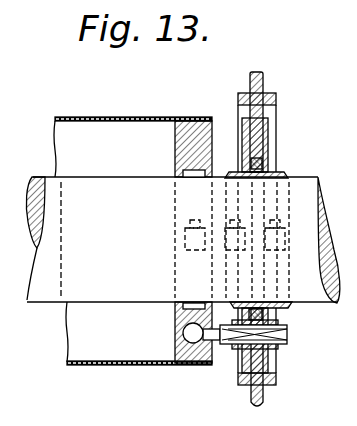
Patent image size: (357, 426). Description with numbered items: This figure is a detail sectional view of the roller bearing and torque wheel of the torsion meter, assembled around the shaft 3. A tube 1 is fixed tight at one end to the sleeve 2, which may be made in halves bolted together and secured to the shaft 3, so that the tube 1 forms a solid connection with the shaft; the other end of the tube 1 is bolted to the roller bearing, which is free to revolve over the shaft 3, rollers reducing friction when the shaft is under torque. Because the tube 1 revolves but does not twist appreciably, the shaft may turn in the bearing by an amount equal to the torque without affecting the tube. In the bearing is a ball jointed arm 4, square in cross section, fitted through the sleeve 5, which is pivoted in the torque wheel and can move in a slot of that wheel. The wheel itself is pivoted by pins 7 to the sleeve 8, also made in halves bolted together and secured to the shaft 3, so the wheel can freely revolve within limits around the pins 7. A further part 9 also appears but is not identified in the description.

The tube 1 is at (86, 117).
The sleeve 2 is at (267, 138).
The shaft 3 is at (52, 288).
The ball jointed arm 4 is at (287, 338).
The sleeve 5 is at (280, 349).
The pins 7 is at (258, 179).
The sleeve 8 is at (291, 304).
The pin 9 is at (261, 76).